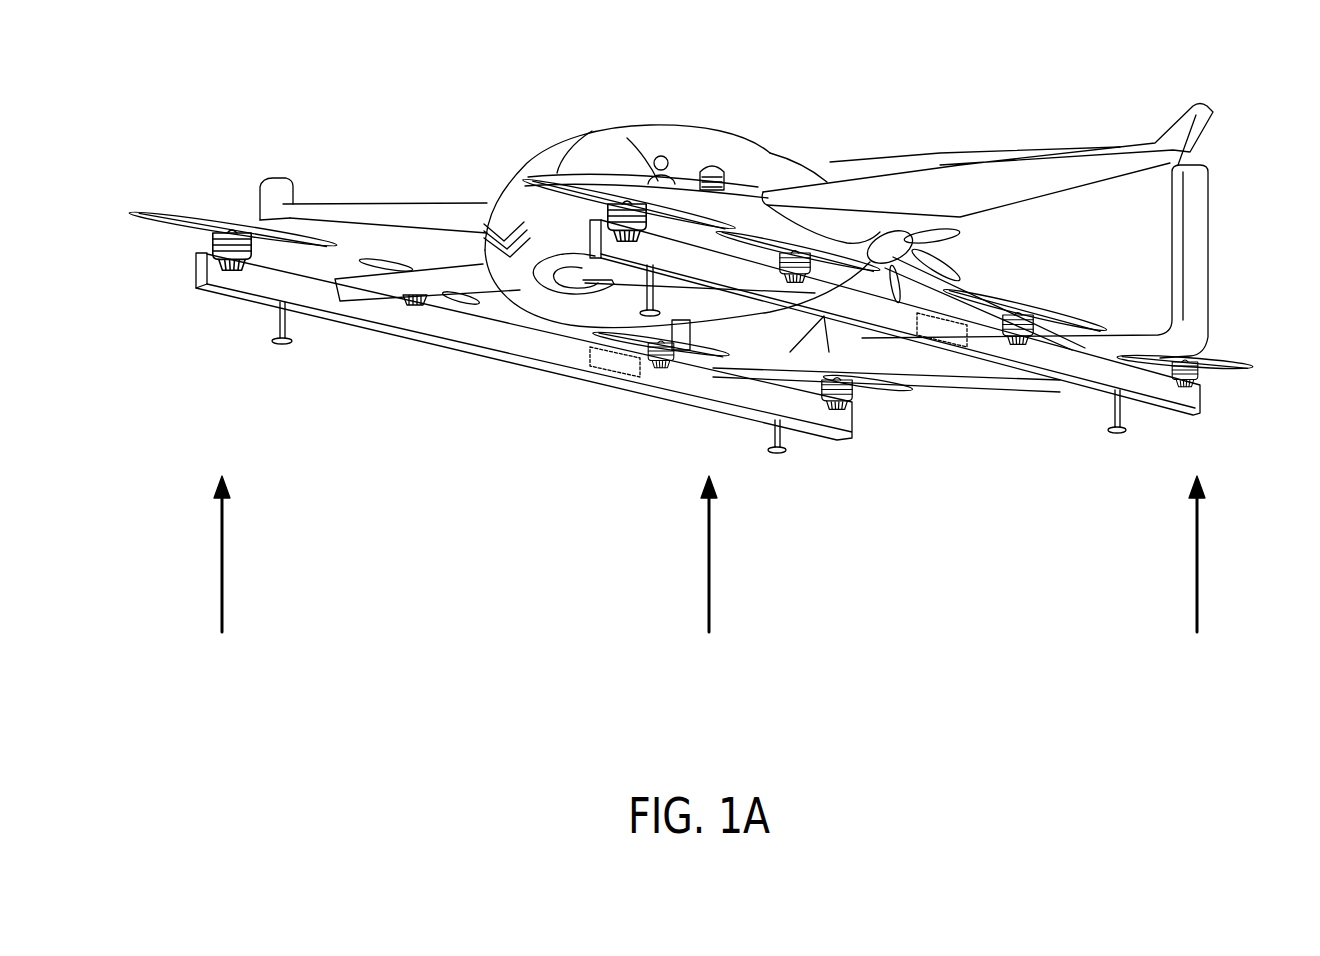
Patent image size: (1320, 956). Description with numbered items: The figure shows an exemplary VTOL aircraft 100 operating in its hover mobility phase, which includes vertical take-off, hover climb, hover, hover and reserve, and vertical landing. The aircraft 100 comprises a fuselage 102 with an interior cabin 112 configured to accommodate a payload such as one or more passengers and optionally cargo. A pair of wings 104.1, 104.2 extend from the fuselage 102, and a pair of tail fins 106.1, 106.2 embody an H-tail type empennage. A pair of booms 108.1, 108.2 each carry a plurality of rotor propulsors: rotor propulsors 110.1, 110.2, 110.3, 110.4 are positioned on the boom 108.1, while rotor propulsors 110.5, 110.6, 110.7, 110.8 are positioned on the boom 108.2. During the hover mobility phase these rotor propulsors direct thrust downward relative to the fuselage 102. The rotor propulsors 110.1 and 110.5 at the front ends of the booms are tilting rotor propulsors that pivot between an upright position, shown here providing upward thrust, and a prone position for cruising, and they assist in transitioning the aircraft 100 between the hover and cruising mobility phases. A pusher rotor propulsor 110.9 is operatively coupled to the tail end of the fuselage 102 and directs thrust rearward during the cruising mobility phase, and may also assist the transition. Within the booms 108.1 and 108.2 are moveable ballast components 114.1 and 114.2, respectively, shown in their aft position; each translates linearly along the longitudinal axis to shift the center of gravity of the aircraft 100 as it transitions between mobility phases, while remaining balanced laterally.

The aircraft 100 is at (195, 54).
The fuselage 102 is at (607, 209).
The wing 104.1 is at (955, 160).
The wing 104.2 is at (330, 203).
The tail fin 106.1 is at (1200, 268).
The tail fin 106.2 is at (695, 336).
The boom 108.1 is at (1093, 392).
The boom 108.2 is at (437, 345).
The tilting rotor propulsor 110.1 is at (627, 242).
The rotor propulsor 110.2 is at (797, 283).
The rotor propulsor 110.3 is at (1019, 345).
The rotor propulsor 110.4 is at (1188, 388).
The tilting rotor propulsor 110.5 is at (232, 270).
The rotor propulsor 110.6 is at (418, 308).
The rotor propulsor 110.7 is at (662, 369).
The rotor propulsor 110.8 is at (840, 408).
The pusher rotor propulsor 110.9 is at (940, 260).
The interior cabin 112 is at (608, 114).
The moveable ballast component 114.1 is at (948, 338).
The moveable ballast component 114.2 is at (612, 372).